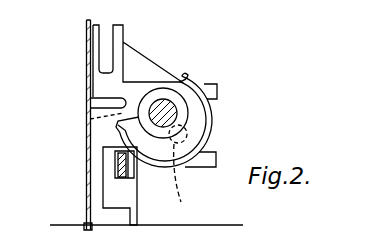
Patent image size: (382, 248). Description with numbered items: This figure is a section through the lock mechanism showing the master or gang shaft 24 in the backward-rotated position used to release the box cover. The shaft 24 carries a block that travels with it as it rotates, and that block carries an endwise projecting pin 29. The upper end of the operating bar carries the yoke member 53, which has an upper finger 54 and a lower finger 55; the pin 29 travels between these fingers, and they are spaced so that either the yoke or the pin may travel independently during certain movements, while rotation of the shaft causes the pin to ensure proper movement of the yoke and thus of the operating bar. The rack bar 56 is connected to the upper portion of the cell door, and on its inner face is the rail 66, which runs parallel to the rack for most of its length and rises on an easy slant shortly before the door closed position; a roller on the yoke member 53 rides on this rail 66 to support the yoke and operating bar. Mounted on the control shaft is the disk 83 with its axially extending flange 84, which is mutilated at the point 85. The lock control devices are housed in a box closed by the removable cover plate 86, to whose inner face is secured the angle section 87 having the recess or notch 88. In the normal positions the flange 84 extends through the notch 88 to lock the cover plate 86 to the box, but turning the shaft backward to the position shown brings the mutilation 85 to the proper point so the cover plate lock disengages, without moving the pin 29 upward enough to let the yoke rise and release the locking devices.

The master or gang shaft 24 is at (172, 120).
The pin 29 is at (183, 173).
The yoke member 53 is at (173, 58).
The upper finger 54 is at (217, 91).
The lower finger 55 is at (197, 168).
The rack bar 56 is at (118, 166).
The rail 66 is at (117, 150).
The disk 83 is at (195, 117).
The axially extending flange 84 is at (193, 142).
The mutilated point of flange 85 is at (187, 69).
The removable cover plate 86 is at (103, 157).
The angle section 87 is at (90, 99).
The recess or notch 88 is at (90, 119).